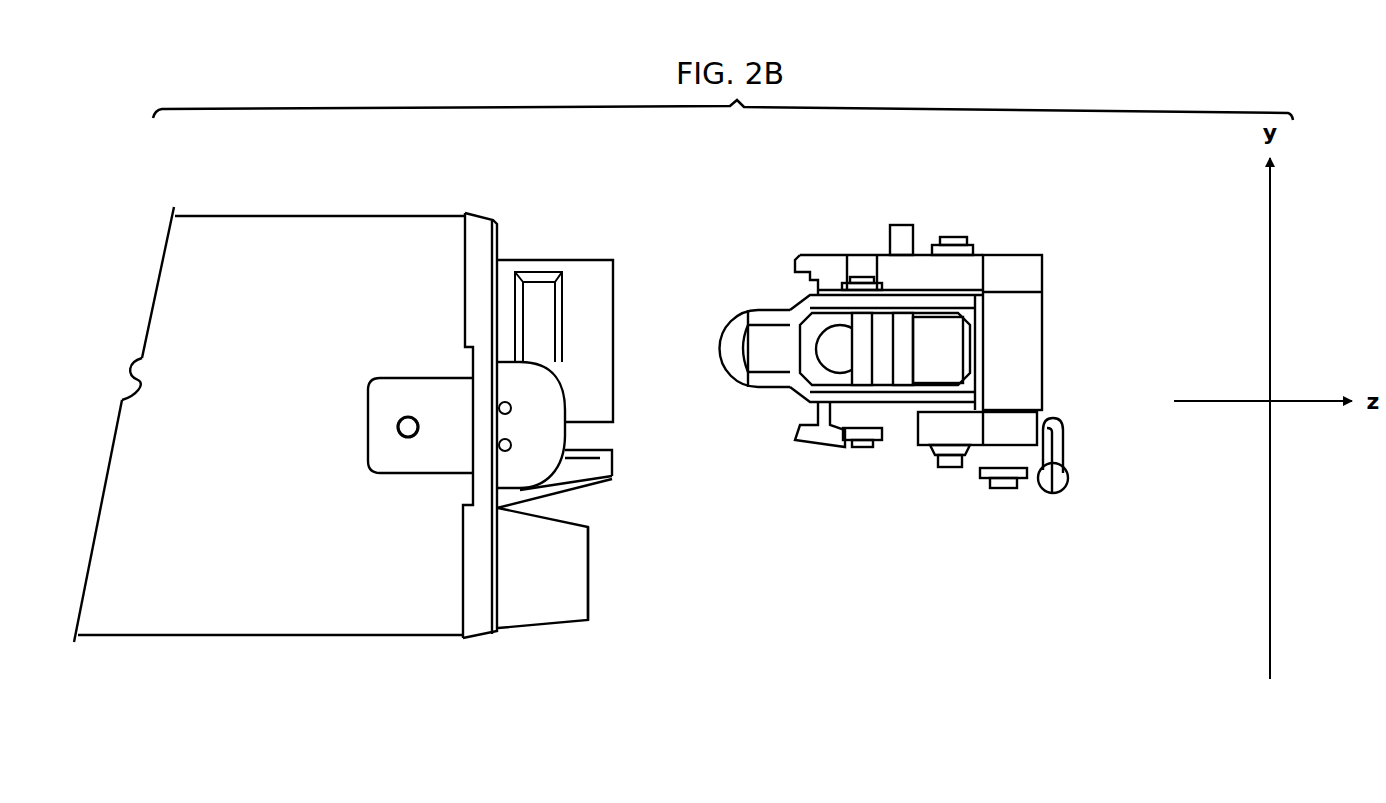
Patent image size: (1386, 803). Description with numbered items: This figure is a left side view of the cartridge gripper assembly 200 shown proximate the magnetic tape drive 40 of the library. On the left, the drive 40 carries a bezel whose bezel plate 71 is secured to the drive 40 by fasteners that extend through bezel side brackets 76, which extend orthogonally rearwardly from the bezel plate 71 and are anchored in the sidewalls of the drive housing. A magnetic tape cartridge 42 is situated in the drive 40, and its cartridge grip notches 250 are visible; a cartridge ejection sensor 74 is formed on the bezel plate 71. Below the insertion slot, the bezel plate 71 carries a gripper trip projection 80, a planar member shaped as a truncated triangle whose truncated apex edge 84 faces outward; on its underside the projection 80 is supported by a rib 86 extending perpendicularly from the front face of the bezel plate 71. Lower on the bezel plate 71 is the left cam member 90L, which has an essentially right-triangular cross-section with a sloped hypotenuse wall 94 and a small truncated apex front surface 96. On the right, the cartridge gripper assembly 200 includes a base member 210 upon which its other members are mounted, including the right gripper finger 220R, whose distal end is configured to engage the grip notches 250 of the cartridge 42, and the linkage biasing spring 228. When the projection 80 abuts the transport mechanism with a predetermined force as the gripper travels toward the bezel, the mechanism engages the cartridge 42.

The drive 40 is at (283, 645).
The bezel plate 71 is at (483, 648).
The bezel side brackets 76 is at (372, 420).
The magnetic tape cartridge 42 is at (582, 255).
The cartridge grip notches 250 is at (537, 285).
The cartridge ejection sensor 74 is at (550, 403).
The truncated apex edge 84 is at (618, 459).
The rib 86 is at (572, 495).
The gripper trip projection 80 is at (601, 458).
The left cam member 90L is at (615, 591).
The hypotenuse wall 94 is at (543, 568).
The truncated apex front surface 96 is at (595, 599).
The cartridge gripper assembly 200 is at (1056, 231).
The right gripper finger 220R is at (832, 255).
The base member 210 is at (893, 428).
The linkage biasing spring 228 is at (1072, 477).